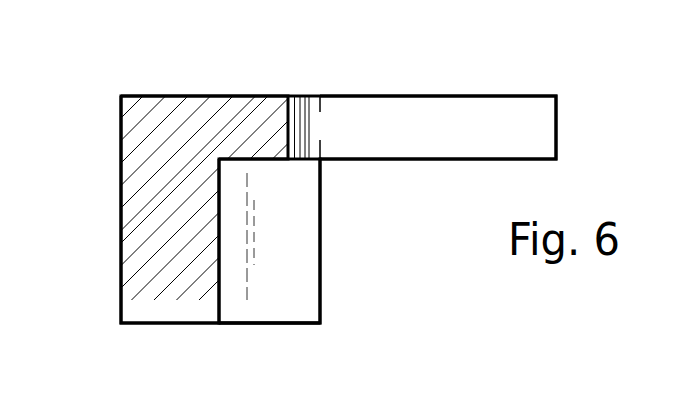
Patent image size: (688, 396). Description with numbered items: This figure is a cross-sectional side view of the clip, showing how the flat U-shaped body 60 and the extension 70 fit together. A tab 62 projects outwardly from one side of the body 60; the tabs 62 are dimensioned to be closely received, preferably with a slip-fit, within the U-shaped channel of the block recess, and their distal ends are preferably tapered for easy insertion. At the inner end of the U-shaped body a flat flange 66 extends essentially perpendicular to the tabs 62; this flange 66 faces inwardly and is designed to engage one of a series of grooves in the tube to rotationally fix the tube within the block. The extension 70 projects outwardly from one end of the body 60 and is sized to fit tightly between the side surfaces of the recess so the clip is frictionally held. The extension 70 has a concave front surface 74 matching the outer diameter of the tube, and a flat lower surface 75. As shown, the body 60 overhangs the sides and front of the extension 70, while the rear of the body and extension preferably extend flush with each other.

The body 60 is at (197, 118).
The tabs 62 is at (482, 112).
The flange 66 is at (290, 130).
The extension 70 is at (136, 226).
The concave front surface 74 is at (297, 232).
The flat lower surface 75 is at (283, 323).